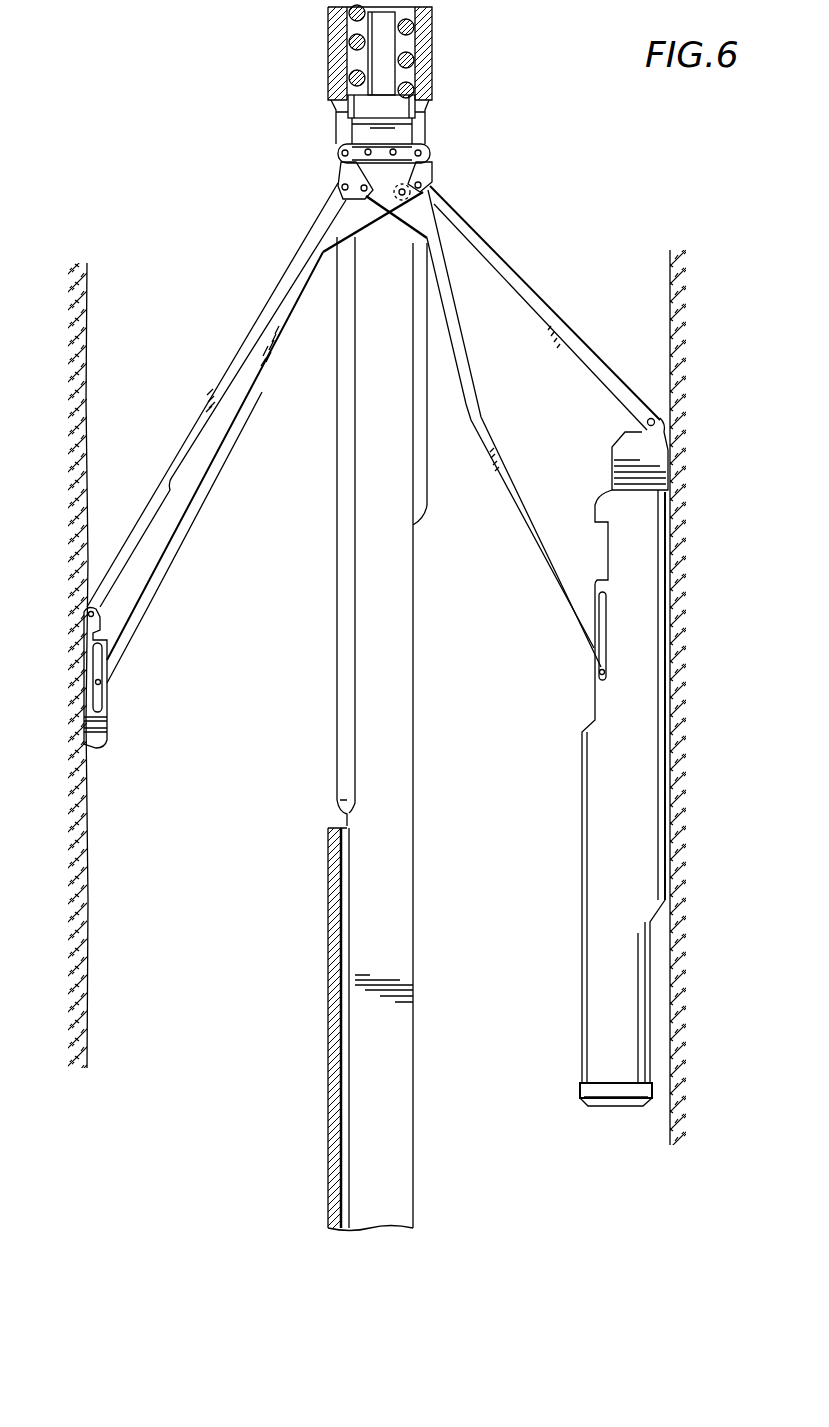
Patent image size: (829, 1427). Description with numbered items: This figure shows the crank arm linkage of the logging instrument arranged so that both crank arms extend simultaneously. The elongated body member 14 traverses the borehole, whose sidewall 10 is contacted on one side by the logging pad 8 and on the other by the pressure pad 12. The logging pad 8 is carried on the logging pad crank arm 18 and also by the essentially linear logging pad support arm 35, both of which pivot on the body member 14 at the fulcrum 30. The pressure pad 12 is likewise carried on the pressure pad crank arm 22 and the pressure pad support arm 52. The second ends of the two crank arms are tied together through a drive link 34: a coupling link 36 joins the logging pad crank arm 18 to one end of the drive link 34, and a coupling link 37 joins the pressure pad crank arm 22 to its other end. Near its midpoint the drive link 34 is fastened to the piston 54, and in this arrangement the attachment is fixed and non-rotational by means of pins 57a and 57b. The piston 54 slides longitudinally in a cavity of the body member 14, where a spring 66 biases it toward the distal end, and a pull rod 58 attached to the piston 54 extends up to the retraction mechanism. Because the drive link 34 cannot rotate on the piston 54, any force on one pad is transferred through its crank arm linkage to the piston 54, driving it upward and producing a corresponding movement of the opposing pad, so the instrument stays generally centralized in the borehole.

The logging pad 8 is at (668, 705).
The borehole sidewall 10 is at (680, 338).
The pressure pad 12 is at (83, 717).
The body member 14 is at (330, 878).
The logging pad crank arm 18 is at (477, 385).
The pressure pad crank arm 22 is at (222, 392).
The fulcrum 30 is at (423, 192).
The drive link 34 is at (410, 152).
The logging pad support arm 35 is at (532, 288).
The coupling link 36 is at (340, 172).
The coupling link 37 is at (415, 173).
The pressure pad support arm 52 is at (160, 477).
The piston 54 is at (405, 128).
The pin 57a is at (342, 143).
The pin 57b is at (397, 147).
The pull rod 58 is at (400, 43).
The spring 66 is at (352, 78).